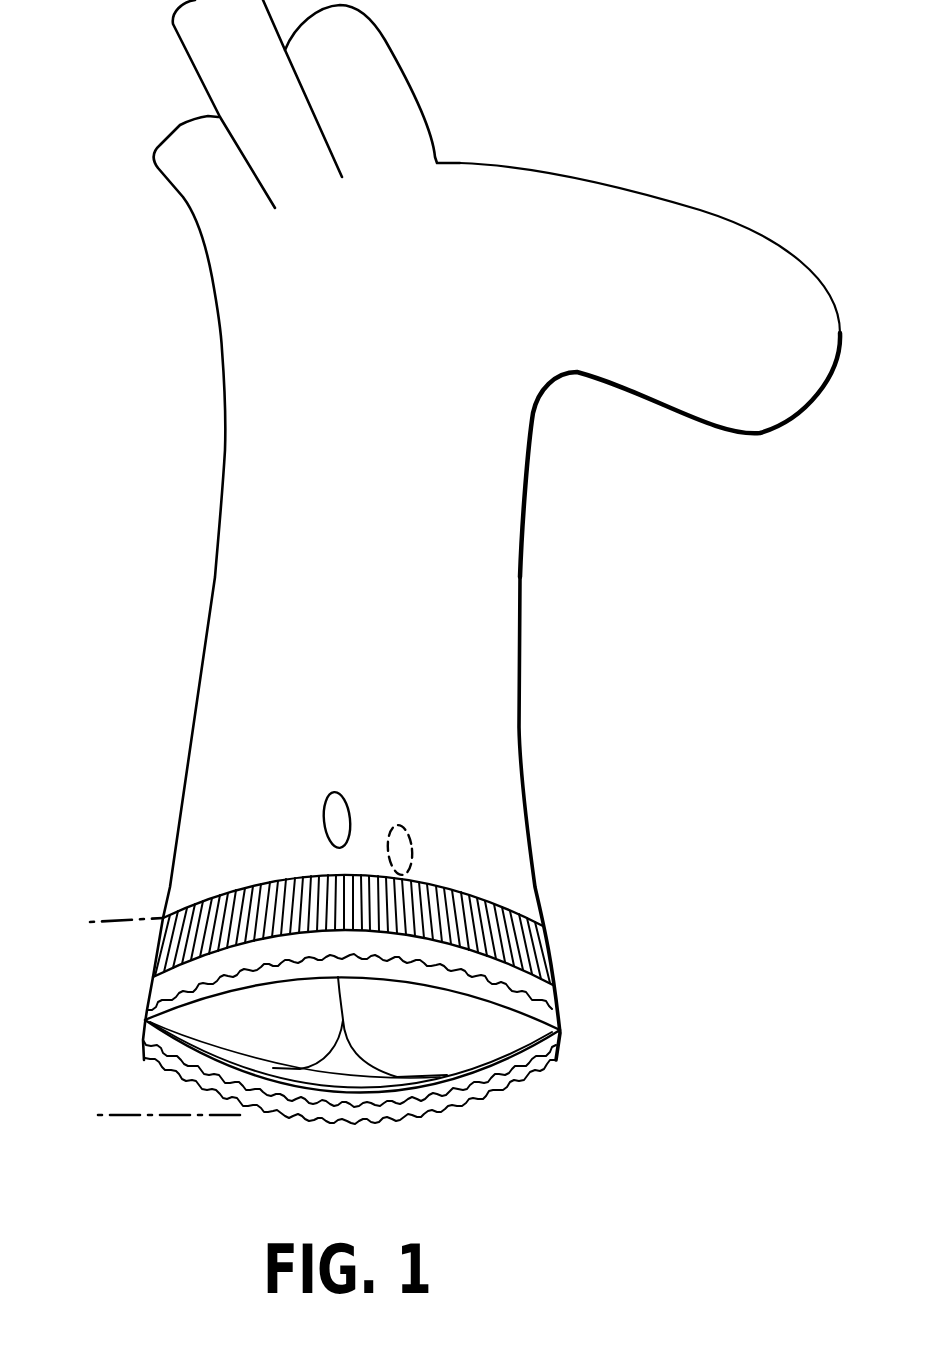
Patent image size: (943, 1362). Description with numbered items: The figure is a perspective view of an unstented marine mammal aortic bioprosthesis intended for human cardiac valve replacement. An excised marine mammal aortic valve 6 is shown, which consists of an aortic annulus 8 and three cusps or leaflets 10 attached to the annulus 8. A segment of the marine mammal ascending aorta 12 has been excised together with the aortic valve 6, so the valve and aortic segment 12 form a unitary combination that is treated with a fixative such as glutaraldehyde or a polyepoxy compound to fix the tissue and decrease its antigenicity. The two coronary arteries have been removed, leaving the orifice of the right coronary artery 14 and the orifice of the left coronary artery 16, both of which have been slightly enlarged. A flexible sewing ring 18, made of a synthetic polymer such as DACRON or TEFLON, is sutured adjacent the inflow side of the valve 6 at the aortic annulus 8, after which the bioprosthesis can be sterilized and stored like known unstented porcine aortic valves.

The aortic valve 6 is at (86, 922).
The aortic annulus 8 is at (530, 950).
The cusps or leaflets 10 is at (278, 1042).
The segment of ascending aorta 12 is at (258, 513).
The orifice of the right coronary artery 14 is at (330, 798).
The orifice of the left coronary artery 16 is at (414, 851).
The sewing ring 18 is at (560, 1025).